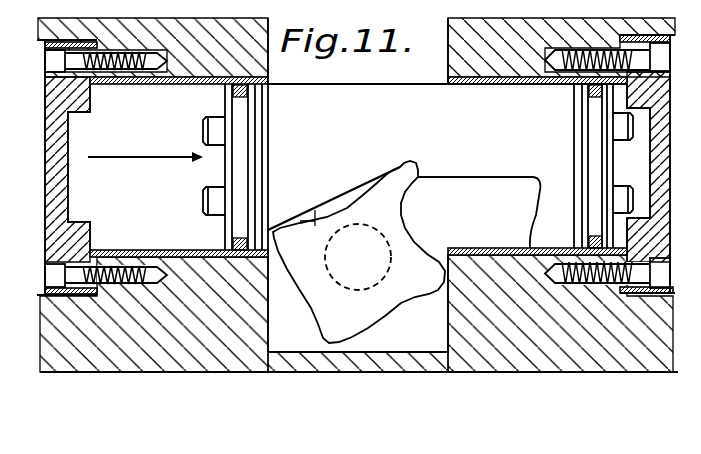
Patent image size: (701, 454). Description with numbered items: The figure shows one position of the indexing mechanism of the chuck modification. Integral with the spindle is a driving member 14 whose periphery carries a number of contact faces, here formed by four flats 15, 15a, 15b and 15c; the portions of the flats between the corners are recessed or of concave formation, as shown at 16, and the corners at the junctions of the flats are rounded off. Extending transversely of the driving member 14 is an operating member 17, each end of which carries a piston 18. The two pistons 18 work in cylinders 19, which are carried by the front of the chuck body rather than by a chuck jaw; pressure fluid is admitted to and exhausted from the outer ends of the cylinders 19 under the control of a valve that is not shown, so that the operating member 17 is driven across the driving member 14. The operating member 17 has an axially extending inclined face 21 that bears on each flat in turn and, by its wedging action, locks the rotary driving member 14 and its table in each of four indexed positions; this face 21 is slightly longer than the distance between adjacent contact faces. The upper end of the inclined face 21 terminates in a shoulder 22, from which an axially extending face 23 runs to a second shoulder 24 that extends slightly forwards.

The driving member 14 is at (358, 257).
The flat 15 is at (392, 172).
The flat 15a is at (407, 183).
The flat 15b is at (343, 345).
The flat 15c is at (275, 244).
The recessed concave formation 16 is at (405, 295).
The operating member 17 is at (480, 147).
The piston 18 is at (233, 160).
The cylinder 19 is at (126, 204).
The inclined face 21 is at (312, 234).
The shoulder 22 is at (418, 177).
The axially extending face 23 is at (489, 194).
The second shoulder 24 is at (528, 226).